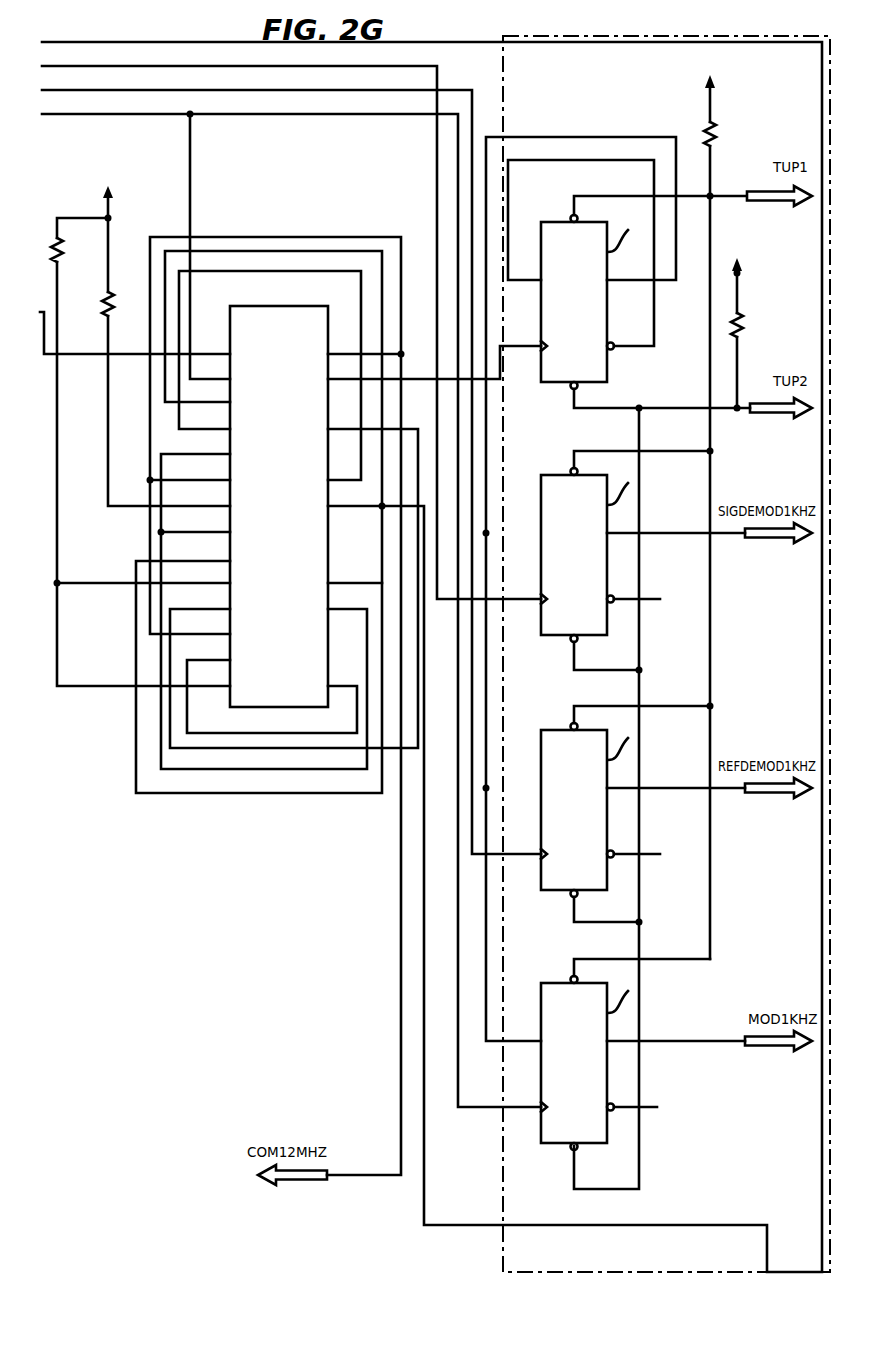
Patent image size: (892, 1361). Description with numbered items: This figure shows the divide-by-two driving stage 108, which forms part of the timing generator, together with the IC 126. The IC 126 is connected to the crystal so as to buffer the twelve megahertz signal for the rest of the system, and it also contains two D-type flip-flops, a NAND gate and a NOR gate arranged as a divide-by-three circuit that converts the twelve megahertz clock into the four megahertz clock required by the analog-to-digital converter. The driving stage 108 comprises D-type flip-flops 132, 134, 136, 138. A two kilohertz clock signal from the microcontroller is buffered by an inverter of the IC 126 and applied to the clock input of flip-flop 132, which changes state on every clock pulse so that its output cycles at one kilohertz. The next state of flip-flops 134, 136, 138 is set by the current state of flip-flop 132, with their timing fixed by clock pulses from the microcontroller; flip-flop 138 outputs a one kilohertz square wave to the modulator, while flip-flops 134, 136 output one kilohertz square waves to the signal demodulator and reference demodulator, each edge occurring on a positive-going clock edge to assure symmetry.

The divide-by-two driving stage 108 is at (506, 80).
The IC 126 is at (293, 304).
The D-type flip-flop 132 is at (608, 372).
The D-type flip-flop 134 is at (608, 632).
The D-type flip-flop 136 is at (608, 886).
The D-type flip-flop 138 is at (607, 1140).